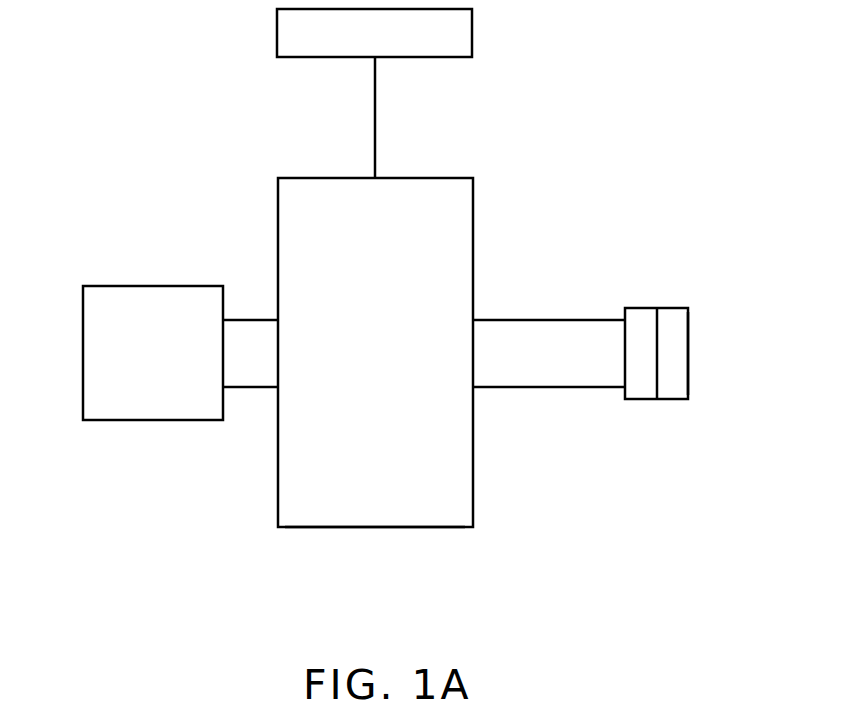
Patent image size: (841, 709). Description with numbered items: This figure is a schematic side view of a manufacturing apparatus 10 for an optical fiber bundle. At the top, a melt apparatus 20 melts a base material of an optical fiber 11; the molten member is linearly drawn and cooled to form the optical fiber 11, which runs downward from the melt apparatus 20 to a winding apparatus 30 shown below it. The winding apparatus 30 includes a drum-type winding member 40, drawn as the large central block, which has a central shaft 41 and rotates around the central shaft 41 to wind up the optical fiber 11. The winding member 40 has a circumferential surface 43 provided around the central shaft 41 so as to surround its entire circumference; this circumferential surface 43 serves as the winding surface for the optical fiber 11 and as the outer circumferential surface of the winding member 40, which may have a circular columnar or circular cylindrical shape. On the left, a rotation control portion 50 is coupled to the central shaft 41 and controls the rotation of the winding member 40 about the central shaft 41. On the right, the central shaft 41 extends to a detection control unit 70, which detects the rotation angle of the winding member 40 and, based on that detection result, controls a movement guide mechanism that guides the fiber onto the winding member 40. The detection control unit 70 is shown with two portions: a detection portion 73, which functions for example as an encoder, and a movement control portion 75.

The manufacturing apparatus 10 is at (105, 78).
The optical fiber 11 is at (376, 116).
The melt apparatus 20 is at (472, 32).
The winding apparatus 30 is at (108, 247).
The winding member 40 is at (435, 550).
The central shaft 41 is at (542, 380).
The circumferential surface 43 is at (310, 518).
The rotation control portion 50 is at (150, 400).
The detection control unit 70 is at (658, 230).
The detection portion 73 is at (642, 320).
The movement control portion 75 is at (676, 320).